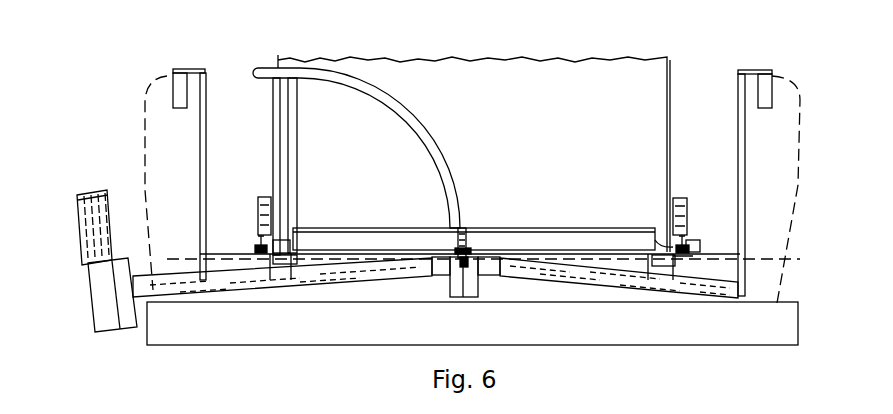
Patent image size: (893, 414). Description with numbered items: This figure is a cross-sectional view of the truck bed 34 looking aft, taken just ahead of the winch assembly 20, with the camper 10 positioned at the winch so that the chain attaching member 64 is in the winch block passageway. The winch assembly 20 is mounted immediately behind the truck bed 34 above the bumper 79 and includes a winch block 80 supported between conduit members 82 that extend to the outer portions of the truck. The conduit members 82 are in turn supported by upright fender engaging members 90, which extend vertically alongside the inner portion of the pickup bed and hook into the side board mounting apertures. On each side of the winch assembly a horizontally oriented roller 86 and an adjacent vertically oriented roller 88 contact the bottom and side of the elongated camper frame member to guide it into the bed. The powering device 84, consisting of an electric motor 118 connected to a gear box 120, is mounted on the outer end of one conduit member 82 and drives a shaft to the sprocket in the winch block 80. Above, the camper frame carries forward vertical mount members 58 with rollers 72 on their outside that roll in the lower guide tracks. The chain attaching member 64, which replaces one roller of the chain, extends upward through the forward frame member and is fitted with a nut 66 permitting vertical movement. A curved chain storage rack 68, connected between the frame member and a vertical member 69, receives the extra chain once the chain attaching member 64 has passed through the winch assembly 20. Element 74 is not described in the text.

The camper 10 is at (576, 48).
The winch assembly 20 is at (102, 355).
The truck bed 34 is at (724, 255).
The vertical mount member 58 is at (273, 105).
The chain attaching member 64 is at (468, 227).
The nut 66 is at (470, 248).
The chain storage rack 68 is at (400, 112).
The vertical member 69 is at (297, 115).
The rollers 72 is at (266, 197).
The mounting bracket 74 is at (283, 243).
The bumper 79 is at (178, 330).
The winch block 80 is at (440, 288).
The conduit members 82 is at (370, 268).
The powering device 84 is at (88, 182).
The horizontally oriented roller 86 is at (284, 263).
The vertically oriented roller 88 is at (257, 248).
The fender engaging members 90 is at (200, 56).
The electric motor 118 is at (93, 215).
The gear box 120 is at (102, 285).